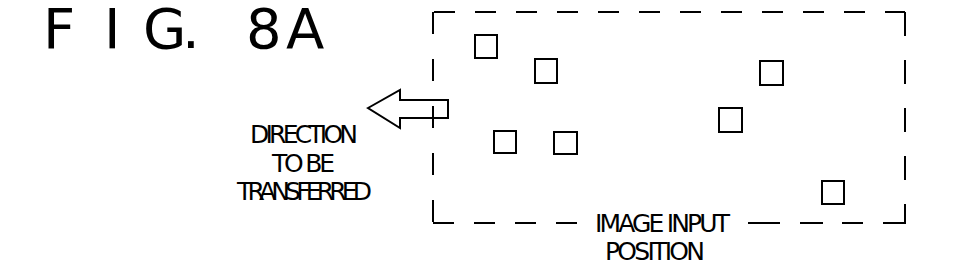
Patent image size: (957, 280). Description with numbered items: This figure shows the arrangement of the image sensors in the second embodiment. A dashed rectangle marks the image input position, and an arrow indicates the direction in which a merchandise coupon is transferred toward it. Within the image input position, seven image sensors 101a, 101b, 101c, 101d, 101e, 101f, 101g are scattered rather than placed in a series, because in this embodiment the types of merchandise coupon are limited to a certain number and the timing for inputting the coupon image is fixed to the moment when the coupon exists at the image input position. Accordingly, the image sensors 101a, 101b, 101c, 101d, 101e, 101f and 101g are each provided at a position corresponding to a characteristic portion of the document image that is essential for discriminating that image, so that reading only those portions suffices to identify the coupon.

The image sensor 101a is at (499, 43).
The image sensor 101b is at (513, 131).
The image sensor 101c is at (559, 70).
The image sensor 101d is at (579, 142).
The image sensor 101e is at (742, 124).
The image sensor 101f is at (779, 61).
The image sensor 101g is at (840, 181).